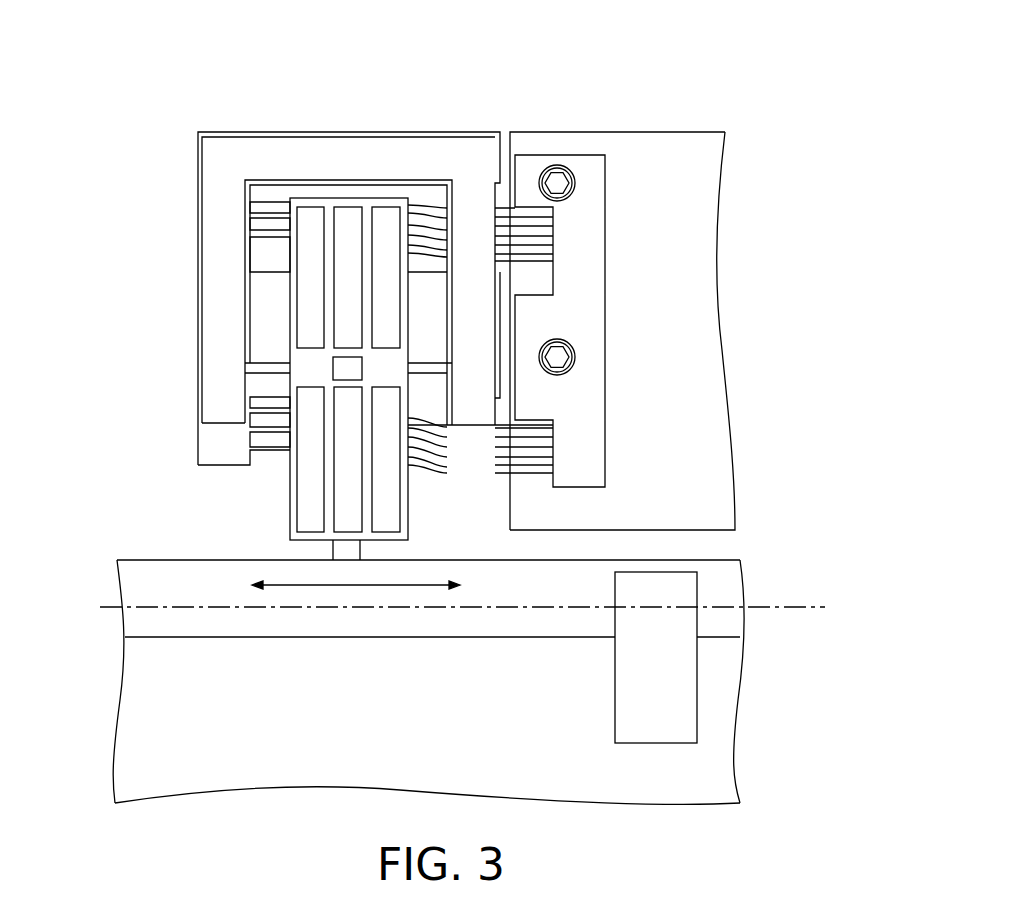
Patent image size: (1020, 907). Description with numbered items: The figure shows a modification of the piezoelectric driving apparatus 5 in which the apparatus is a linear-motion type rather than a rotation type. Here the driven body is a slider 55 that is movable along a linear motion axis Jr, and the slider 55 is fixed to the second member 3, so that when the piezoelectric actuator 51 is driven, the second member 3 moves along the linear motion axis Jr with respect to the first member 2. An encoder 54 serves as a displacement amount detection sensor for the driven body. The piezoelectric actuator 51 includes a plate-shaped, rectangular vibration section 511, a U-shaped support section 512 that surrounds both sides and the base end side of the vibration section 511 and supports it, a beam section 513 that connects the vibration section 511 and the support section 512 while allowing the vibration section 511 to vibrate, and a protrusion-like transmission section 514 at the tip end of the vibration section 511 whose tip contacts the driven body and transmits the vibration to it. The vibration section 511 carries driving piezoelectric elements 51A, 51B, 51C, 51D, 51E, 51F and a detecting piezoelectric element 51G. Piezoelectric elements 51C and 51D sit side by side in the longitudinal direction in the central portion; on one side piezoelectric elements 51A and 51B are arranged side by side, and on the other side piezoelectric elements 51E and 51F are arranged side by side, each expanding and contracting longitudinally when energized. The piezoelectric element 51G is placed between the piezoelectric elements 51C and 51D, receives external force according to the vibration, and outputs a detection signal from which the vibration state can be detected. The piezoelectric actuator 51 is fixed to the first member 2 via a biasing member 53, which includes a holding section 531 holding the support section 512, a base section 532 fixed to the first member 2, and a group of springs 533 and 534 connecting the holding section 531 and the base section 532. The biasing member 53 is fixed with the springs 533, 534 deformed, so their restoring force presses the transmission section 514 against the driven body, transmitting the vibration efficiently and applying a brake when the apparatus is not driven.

The piezoelectric driving apparatus 5 is at (152, 56).
The piezoelectric actuator 51 is at (453, 284).
The vibration section 511 is at (286, 312).
The support section 512 is at (295, 155).
The beam section 513 is at (270, 367).
The transmission section 514 is at (350, 548).
The piezoelectric element 51A is at (386, 497).
The piezoelectric element 51B is at (387, 285).
The piezoelectric element 51C is at (347, 518).
The piezoelectric element 51D is at (348, 227).
The piezoelectric element 51E is at (308, 482).
The piezoelectric element 51F is at (308, 258).
The piezoelectric element for detection 51G is at (348, 370).
The biasing member 53 is at (647, 331).
The holding section 531 is at (226, 441).
The base section 532 is at (580, 228).
The spring 533 is at (440, 206).
The spring 534 is at (512, 455).
The encoder 54 is at (702, 693).
The slider 55 is at (116, 580).
The first member 2 is at (683, 180).
The second member 3 is at (187, 713).
The linear motion axis Jr is at (453, 607).